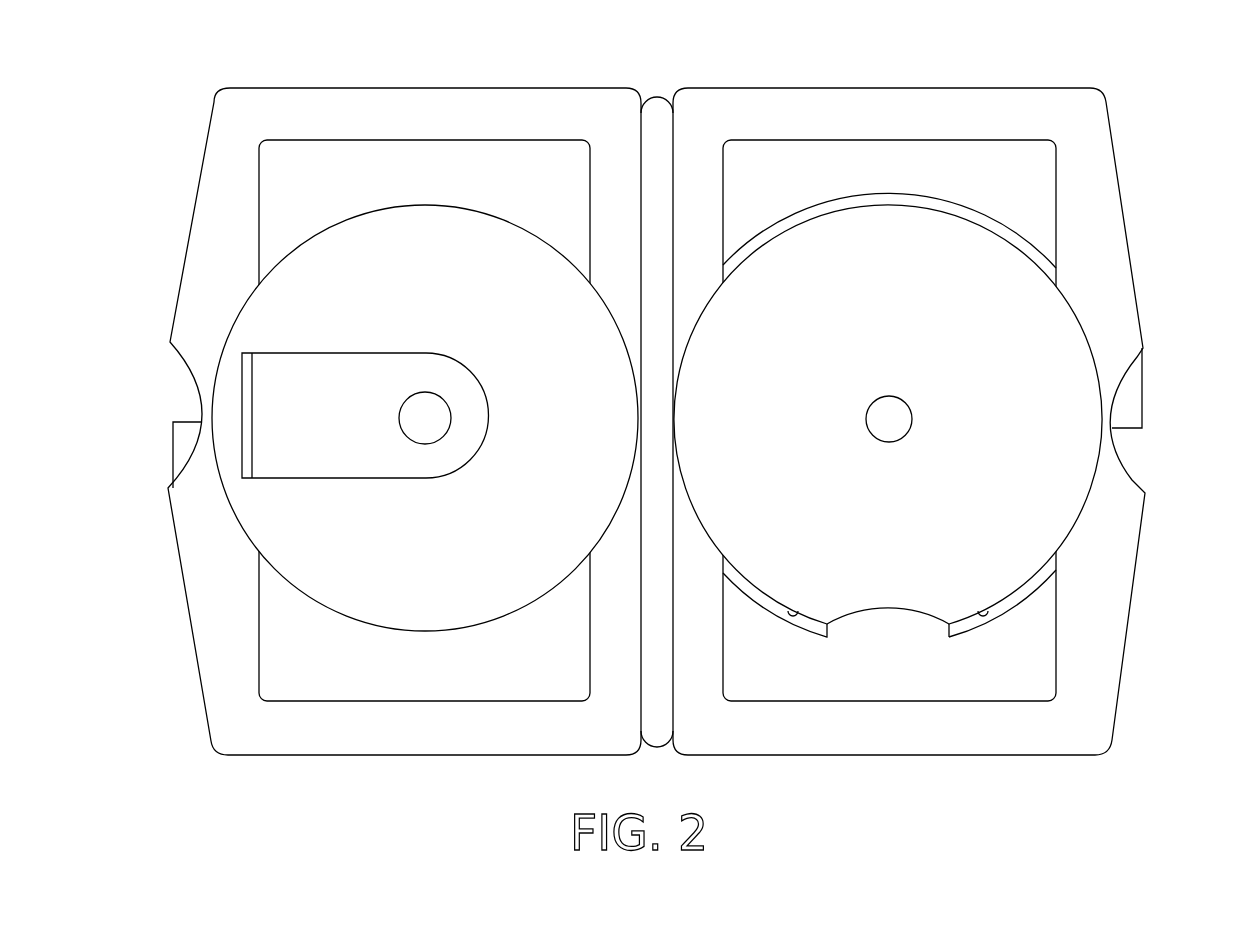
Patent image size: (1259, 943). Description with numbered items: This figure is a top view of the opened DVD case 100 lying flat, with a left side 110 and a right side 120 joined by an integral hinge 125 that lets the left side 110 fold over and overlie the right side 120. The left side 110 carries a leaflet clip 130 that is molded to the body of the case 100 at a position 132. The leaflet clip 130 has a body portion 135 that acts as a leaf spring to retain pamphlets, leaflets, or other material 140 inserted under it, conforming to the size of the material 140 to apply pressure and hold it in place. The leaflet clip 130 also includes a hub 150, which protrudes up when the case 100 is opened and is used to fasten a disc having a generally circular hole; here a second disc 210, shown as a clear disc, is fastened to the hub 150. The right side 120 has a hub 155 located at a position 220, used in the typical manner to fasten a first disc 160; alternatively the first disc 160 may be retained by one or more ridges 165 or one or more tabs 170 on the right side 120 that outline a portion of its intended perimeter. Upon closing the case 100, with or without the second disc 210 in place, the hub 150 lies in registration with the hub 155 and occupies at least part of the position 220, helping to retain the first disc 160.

The DVD case 100 is at (655, 410).
The left side 110 is at (358, 385).
The right side 120 is at (954, 417).
The integral hinge 125 is at (660, 98).
The leaflet clip 130 is at (283, 399).
The position 132 is at (240, 387).
The body portion 135 is at (327, 437).
The material 140 is at (287, 182).
The hub 150 is at (423, 410).
The hub 155 is at (890, 419).
The first disc 160 is at (1095, 482).
The ridges 165 is at (1037, 594).
The tabs 170 is at (983, 622).
The second disc 210 is at (233, 503).
The position 220 is at (884, 452).